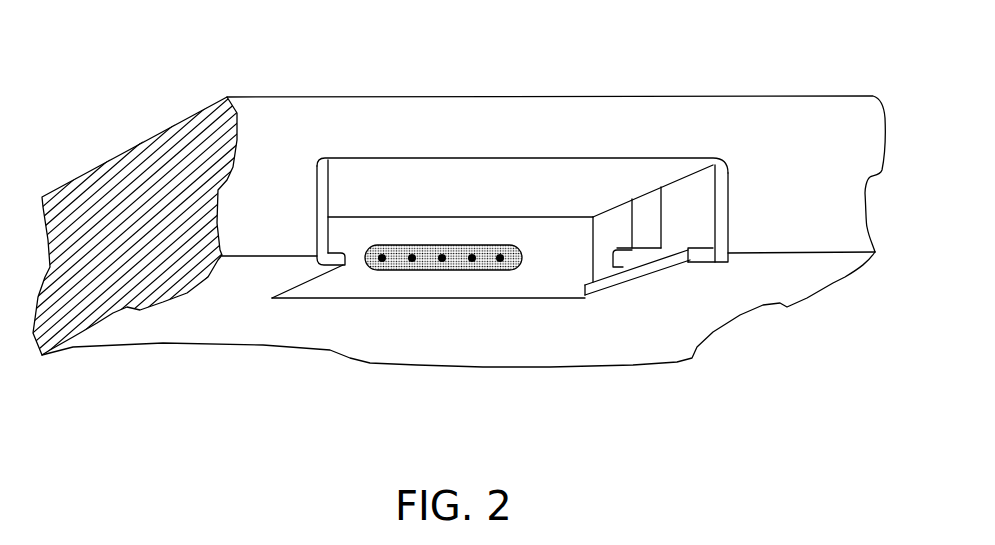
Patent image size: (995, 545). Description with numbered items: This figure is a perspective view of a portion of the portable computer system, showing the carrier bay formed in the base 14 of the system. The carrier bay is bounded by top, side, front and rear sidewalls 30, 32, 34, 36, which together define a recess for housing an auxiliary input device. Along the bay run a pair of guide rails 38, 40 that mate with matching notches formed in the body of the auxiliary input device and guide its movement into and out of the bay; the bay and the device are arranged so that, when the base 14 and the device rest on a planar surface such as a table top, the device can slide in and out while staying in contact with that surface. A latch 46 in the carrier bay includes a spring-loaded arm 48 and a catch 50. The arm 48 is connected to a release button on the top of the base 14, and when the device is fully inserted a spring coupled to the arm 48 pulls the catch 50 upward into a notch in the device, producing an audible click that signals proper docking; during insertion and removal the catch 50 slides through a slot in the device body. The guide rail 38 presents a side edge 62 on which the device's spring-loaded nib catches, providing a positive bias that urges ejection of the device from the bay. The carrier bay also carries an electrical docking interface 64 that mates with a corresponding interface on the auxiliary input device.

The base 14 is at (340, 97).
The top sidewall 30 is at (448, 200).
The side sidewall 32 is at (572, 264).
The front sidewall 34 is at (333, 193).
The rear sidewall 36 is at (690, 228).
The guide rail 38 is at (597, 287).
The guide rail 40 is at (304, 284).
The latch 46 is at (683, 209).
The spring-loaded arm 48 is at (646, 217).
The catch 50 is at (623, 252).
The side edge 62 is at (700, 252).
The electrical docking interface 64 is at (432, 271).